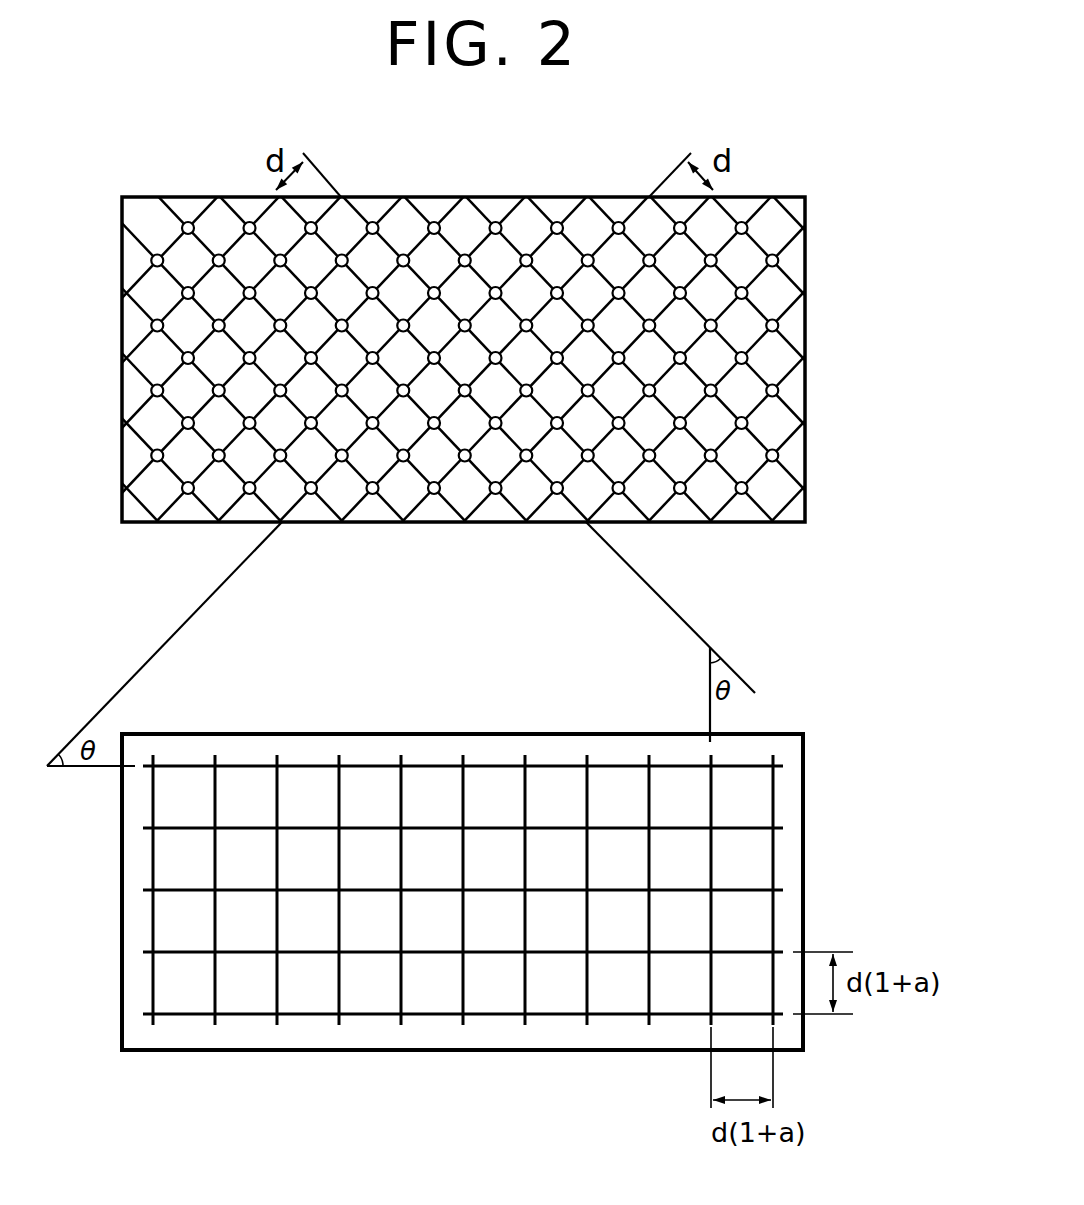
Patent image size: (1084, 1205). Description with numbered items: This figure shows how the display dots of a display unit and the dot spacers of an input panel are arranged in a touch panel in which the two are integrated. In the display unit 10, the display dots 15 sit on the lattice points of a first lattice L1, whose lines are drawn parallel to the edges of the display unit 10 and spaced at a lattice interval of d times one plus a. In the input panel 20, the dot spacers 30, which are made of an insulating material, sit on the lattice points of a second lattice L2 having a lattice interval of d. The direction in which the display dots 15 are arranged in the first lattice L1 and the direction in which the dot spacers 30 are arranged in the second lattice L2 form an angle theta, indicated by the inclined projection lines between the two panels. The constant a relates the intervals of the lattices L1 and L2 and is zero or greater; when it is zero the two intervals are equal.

The display unit 10 is at (805, 791).
The display dots 15 is at (148, 957).
The first lattice L1 is at (780, 913).
The input panel 20 is at (806, 373).
The dot spacers 30 is at (782, 260).
The second lattice L2 is at (762, 412).